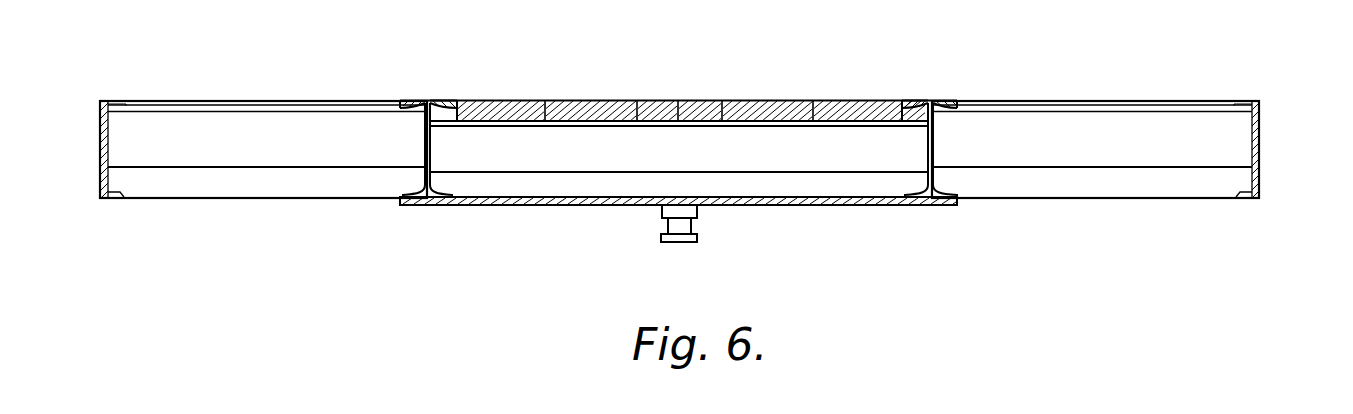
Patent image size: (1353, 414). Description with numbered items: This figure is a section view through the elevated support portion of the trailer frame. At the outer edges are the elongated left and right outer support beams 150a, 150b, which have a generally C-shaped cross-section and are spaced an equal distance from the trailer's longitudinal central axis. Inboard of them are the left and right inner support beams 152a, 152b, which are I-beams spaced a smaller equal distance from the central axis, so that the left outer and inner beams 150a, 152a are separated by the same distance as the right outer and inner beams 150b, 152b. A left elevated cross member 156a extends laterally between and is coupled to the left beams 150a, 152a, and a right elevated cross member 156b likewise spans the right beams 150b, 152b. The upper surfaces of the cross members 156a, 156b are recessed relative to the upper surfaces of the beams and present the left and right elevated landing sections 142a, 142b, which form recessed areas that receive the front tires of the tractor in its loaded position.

The left elevated landing section 142a is at (267, 167).
The right elevated landing section 142b is at (1117, 167).
The left outer support beam 150a is at (108, 148).
The right outer support beam 150b is at (1260, 152).
The left inner support beam 152a is at (432, 144).
The right inner support beam 152b is at (934, 147).
The left elevated cross member 156a is at (217, 185).
The right elevated cross member 156b is at (1053, 186).